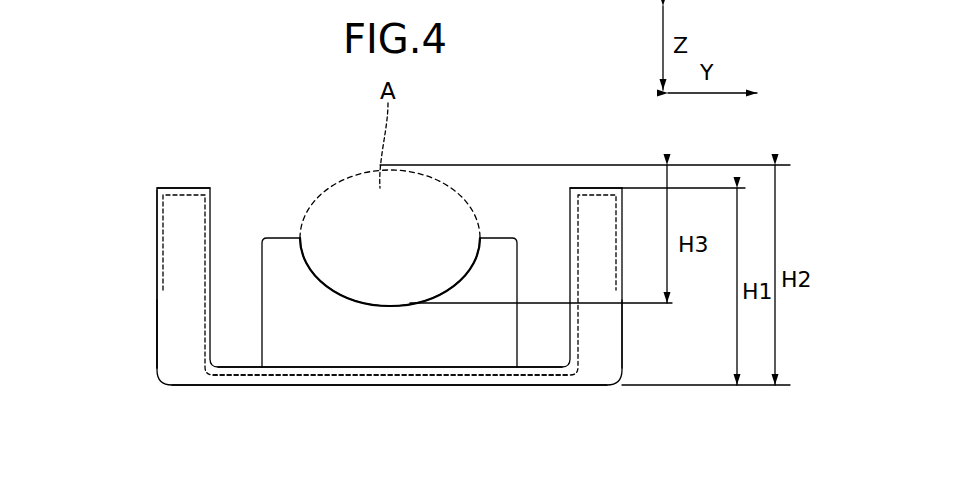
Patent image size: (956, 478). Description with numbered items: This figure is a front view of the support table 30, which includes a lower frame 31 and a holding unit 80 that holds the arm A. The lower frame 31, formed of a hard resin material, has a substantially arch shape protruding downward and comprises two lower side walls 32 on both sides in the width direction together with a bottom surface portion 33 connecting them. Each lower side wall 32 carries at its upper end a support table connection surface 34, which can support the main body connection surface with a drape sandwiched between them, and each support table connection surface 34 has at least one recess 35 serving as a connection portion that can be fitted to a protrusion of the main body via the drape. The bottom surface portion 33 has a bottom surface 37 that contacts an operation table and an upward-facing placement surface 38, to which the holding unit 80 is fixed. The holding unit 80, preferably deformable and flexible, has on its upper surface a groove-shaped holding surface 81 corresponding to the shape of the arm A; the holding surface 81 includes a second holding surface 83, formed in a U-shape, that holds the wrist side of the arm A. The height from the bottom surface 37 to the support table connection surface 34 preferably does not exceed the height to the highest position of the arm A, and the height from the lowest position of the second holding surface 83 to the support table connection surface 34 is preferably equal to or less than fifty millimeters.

The support table 30 is at (152, 210).
The lower frame 31 is at (160, 278).
The lower side wall 32 is at (160, 327).
The bottom surface portion 33 is at (352, 377).
The support table connection surface 34 is at (178, 188).
The recess 35 is at (193, 186).
The bottom surface 37 is at (433, 386).
The placement surface 38 is at (315, 365).
The holding unit 80 is at (388, 352).
The holding surface 81 is at (342, 288).
The second holding surface 83 is at (426, 297).